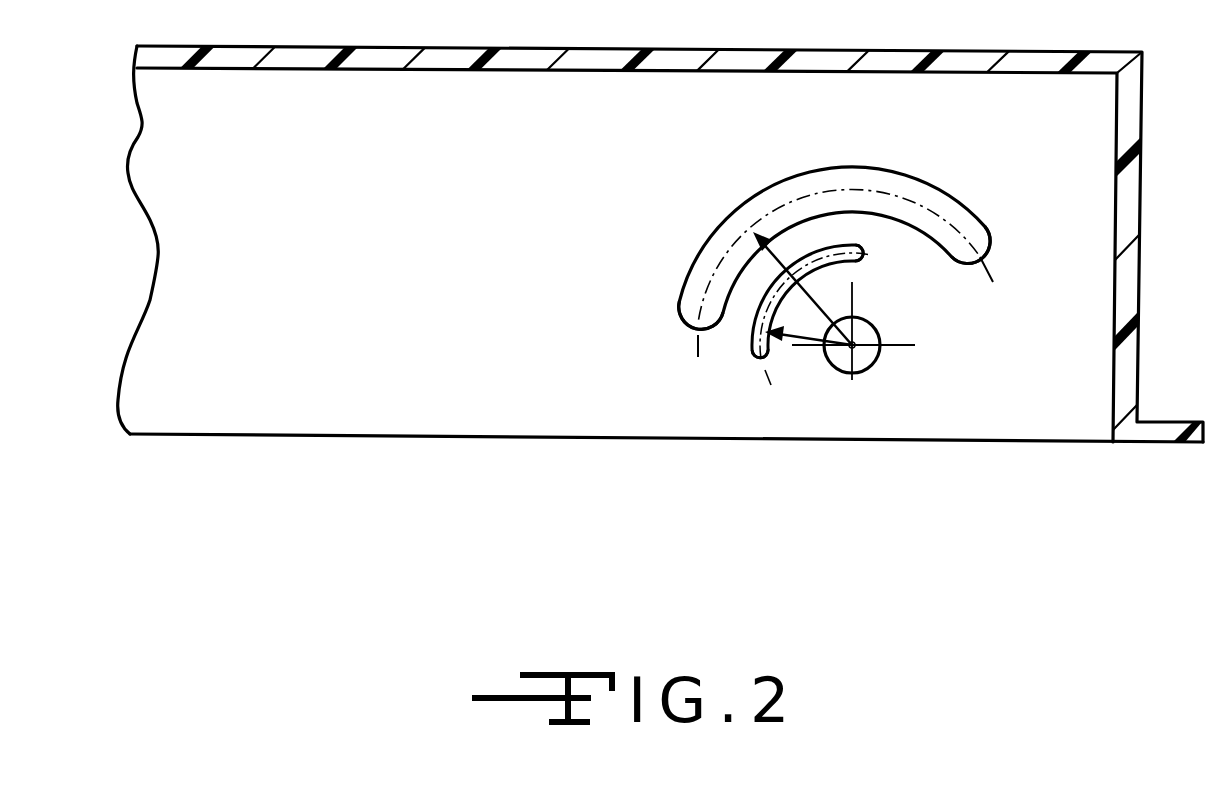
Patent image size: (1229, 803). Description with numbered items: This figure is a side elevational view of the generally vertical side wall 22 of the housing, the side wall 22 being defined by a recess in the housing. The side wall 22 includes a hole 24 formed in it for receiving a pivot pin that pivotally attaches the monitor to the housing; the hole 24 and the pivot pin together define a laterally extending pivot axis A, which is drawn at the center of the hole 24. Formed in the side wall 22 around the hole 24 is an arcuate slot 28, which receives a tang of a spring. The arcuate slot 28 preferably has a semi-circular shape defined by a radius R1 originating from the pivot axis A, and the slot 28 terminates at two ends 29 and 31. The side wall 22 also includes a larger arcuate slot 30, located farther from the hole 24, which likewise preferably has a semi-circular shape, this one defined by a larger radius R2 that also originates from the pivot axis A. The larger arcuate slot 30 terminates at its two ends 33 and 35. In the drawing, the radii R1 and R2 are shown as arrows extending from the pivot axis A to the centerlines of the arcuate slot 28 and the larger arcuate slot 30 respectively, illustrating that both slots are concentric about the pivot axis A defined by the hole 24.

The side wall 22 is at (645, 96).
The hole 24 is at (870, 366).
The arcuate slot 28 is at (835, 273).
The end of arcuate slot 29 is at (762, 356).
The larger arcuate slot 30 is at (916, 178).
The end of arcuate slot 31 is at (852, 247).
The end of larger arcuate slot 33 is at (980, 236).
The end of larger arcuate slot 35 is at (697, 318).
The radius R1 is at (803, 343).
The radius R2 is at (785, 272).
The pivot axis A is at (840, 370).